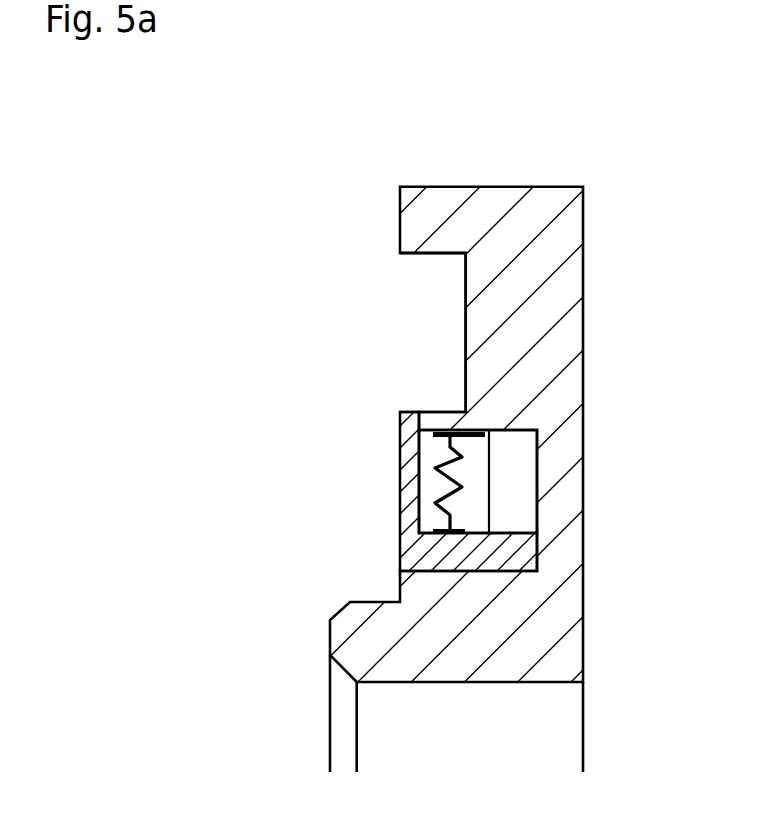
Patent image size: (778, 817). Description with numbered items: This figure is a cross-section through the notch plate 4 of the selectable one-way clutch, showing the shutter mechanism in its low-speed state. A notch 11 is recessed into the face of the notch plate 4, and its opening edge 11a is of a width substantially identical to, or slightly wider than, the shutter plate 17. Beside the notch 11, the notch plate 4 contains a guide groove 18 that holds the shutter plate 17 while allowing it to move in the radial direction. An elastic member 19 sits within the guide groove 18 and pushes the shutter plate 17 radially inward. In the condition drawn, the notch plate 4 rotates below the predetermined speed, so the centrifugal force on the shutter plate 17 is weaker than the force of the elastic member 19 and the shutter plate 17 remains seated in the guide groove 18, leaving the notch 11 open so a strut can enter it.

The notch plate 4 is at (626, 154).
The notch 11 is at (418, 327).
The opening edge 11a is at (403, 253).
The shutter plate 17 is at (502, 553).
The guide groove 18 is at (557, 513).
The elastic member 19 is at (460, 458).